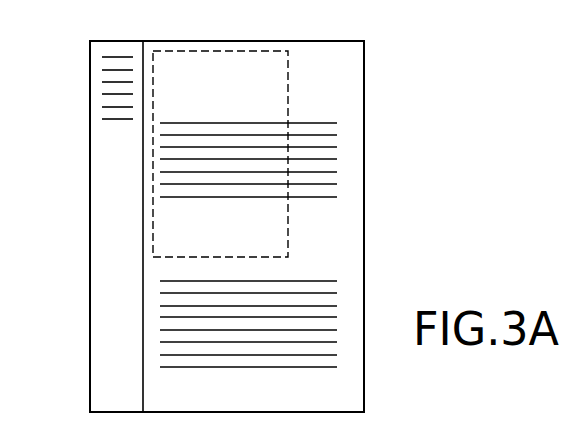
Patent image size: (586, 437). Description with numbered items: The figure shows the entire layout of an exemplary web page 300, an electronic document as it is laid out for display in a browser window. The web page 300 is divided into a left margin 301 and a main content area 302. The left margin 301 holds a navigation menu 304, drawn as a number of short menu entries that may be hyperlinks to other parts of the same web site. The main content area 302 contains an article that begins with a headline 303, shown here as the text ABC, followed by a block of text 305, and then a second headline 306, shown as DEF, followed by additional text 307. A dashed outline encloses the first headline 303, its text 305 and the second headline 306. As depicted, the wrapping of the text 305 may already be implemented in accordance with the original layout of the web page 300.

The web page 300 is at (488, 80).
The left margin 301 is at (103, 45).
The main content area 302 is at (338, 56).
The headline 303 is at (232, 98).
The navigation menu 304 is at (103, 83).
The text 305 is at (317, 128).
The second headline 306 is at (223, 250).
The additional text 307 is at (323, 288).